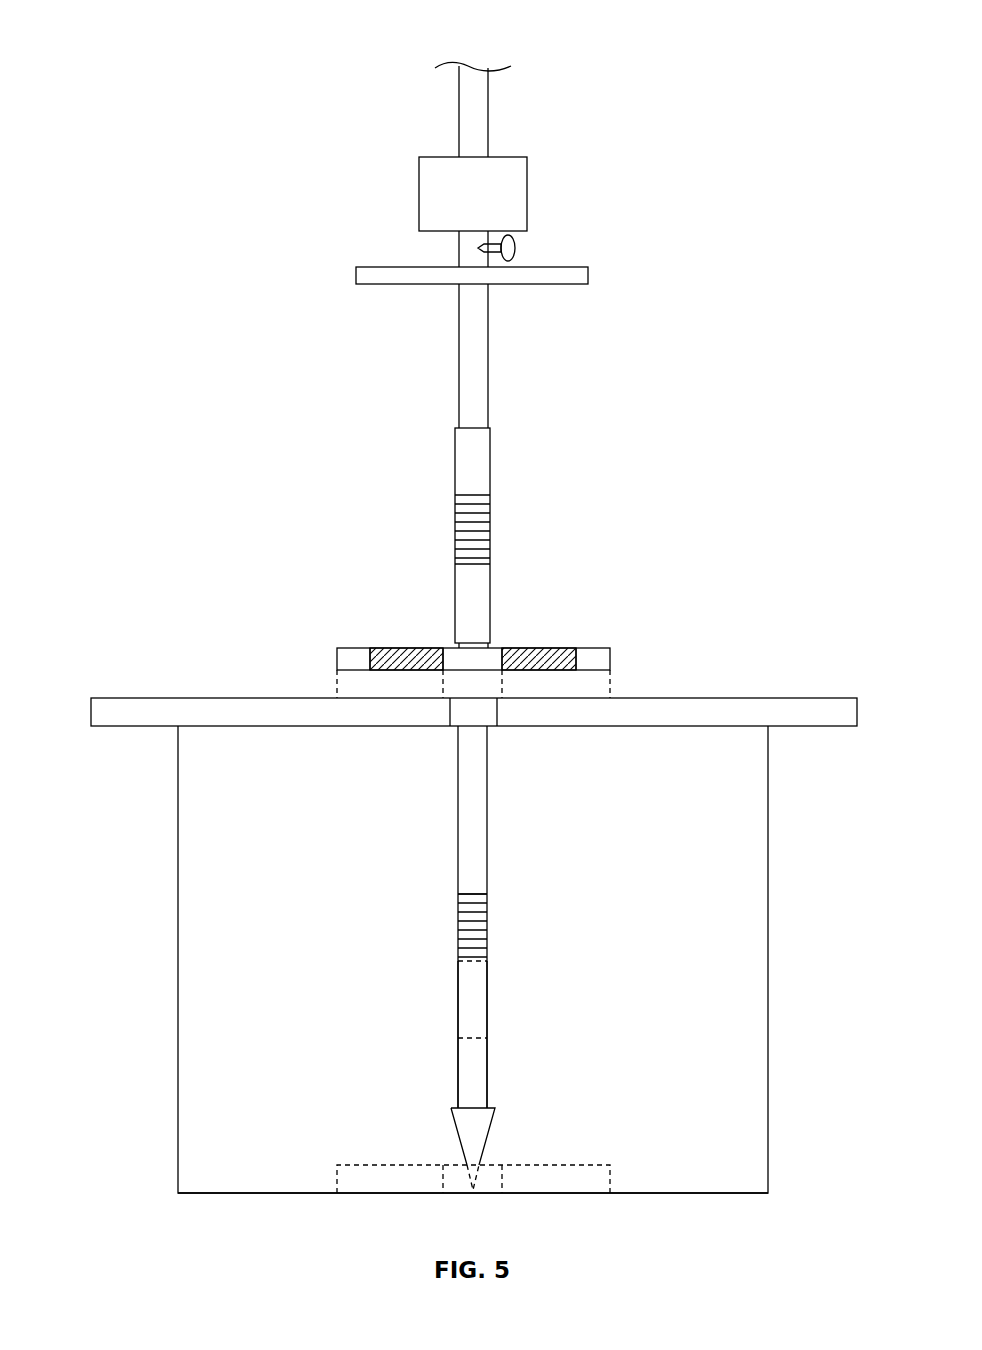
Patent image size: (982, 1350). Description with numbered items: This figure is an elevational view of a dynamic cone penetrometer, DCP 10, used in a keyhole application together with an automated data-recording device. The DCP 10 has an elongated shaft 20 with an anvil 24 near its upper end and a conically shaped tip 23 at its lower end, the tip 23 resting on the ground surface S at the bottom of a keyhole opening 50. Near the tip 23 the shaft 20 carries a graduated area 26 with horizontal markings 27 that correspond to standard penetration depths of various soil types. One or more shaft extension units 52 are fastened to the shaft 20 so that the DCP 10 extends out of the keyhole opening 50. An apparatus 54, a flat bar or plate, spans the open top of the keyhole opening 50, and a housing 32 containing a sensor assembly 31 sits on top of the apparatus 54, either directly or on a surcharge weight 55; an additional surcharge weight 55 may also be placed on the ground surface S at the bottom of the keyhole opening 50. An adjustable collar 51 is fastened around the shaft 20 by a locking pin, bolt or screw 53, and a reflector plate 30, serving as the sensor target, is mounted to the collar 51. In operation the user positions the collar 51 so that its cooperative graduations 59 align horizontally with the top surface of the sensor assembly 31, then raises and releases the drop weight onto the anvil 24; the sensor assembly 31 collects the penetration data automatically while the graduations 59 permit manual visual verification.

The DCP 10 is at (290, 36).
The elongated shaft 20 is at (478, 800).
The conically shaped tip 23 is at (465, 1140).
The anvil 24 is at (528, 193).
The graduated area 26 is at (496, 896).
The horizontal markings 27 is at (458, 922).
The reflector plate 30 is at (590, 276).
The sensor assembly 31 is at (540, 648).
The housing 32 is at (612, 656).
The keyhole opening 50 is at (190, 963).
The adjustable collar 51 is at (481, 474).
The shaft extension unit 52 is at (476, 1000).
The locking pin, bolt or screw 53 is at (516, 246).
The apparatus 54 is at (100, 712).
The surcharge weight 55 is at (335, 690).
The cooperative graduations 59 is at (452, 502).
The ground surface S is at (195, 1192).